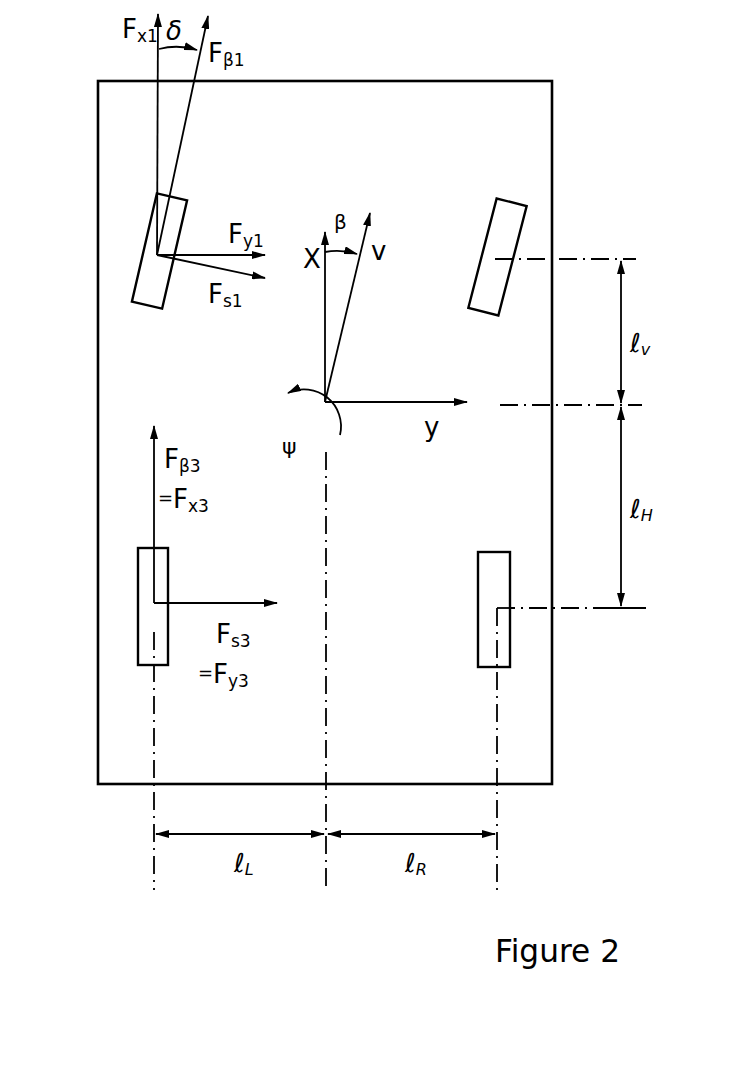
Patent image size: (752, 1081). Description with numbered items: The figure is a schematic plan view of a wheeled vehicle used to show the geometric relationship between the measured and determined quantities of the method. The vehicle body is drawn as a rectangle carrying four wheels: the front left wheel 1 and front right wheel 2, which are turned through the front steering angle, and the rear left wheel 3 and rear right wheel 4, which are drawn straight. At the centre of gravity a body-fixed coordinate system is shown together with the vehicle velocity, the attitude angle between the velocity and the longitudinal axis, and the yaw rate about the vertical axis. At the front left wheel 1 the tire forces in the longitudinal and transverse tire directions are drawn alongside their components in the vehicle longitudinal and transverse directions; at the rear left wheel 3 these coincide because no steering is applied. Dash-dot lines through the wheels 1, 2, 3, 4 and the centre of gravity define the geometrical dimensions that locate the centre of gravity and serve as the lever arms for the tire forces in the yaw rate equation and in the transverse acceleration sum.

The front left wheel 1 is at (150, 161).
The front right wheel 2 is at (552, 203).
The rear left wheel 3 is at (158, 658).
The rear right wheel 4 is at (561, 721).